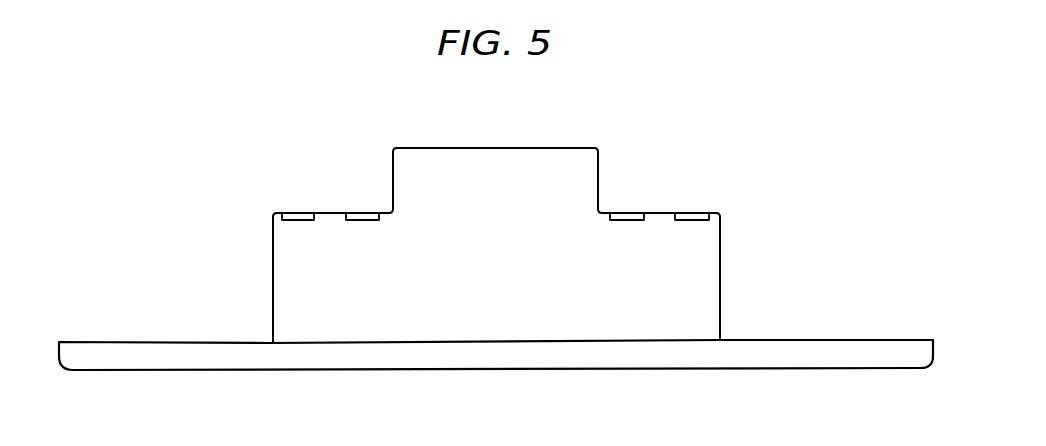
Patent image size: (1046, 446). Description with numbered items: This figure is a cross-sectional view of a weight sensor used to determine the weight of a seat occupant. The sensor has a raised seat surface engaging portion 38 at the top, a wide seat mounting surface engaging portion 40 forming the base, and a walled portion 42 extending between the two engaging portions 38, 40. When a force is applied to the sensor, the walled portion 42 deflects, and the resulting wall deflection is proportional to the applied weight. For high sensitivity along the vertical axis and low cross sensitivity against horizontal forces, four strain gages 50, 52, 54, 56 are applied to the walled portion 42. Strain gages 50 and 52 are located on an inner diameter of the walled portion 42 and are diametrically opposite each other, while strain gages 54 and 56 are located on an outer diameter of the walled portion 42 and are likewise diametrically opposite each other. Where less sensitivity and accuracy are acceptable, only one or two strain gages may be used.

The seat surface engaging portion 38 is at (492, 148).
The seat mounting surface engaging portion 40 is at (841, 340).
The walled portion 42 is at (661, 212).
The strain gage 50 is at (358, 212).
The strain gage 52 is at (630, 212).
The strain gage 54 is at (298, 212).
The strain gage 56 is at (694, 212).